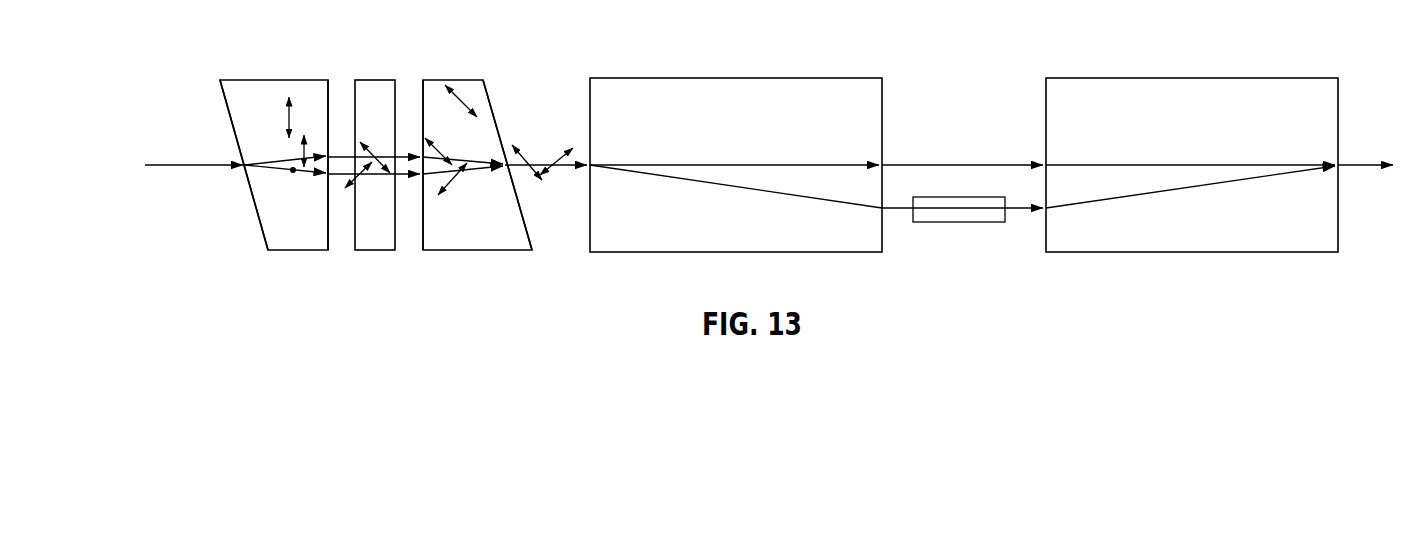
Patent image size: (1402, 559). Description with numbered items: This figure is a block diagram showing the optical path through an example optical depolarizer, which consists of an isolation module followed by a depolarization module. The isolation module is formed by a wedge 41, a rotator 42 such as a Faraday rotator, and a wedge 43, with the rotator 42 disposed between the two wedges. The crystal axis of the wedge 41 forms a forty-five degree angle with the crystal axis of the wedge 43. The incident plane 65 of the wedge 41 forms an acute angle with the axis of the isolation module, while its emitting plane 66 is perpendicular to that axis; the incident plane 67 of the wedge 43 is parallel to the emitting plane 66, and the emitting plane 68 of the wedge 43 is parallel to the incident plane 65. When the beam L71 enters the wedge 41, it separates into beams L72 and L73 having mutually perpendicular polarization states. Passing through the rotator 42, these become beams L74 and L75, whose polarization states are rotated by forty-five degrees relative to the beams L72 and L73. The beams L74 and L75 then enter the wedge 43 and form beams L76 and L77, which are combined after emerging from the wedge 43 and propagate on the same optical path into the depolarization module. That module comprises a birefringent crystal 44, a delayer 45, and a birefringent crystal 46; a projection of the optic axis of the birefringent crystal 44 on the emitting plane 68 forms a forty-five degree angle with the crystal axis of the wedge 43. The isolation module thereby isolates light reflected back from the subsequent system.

The wedge 41 is at (273, 220).
The rotator 42 is at (377, 247).
The wedge 43 is at (468, 247).
The birefringent crystal 44 is at (692, 245).
The delayer 45 is at (978, 217).
The birefringent crystal 46 is at (1180, 245).
The incident plane 65 is at (220, 86).
The emitting plane 66 is at (327, 97).
The incident plane 67 is at (427, 92).
The emitting plane 68 is at (492, 98).
The beam L71 is at (180, 167).
The beam L72 is at (280, 158).
The beam L73 is at (272, 168).
The beam L74 is at (375, 160).
The beam L75 is at (360, 178).
The beam L76 is at (457, 158).
The beam L77 is at (468, 170).